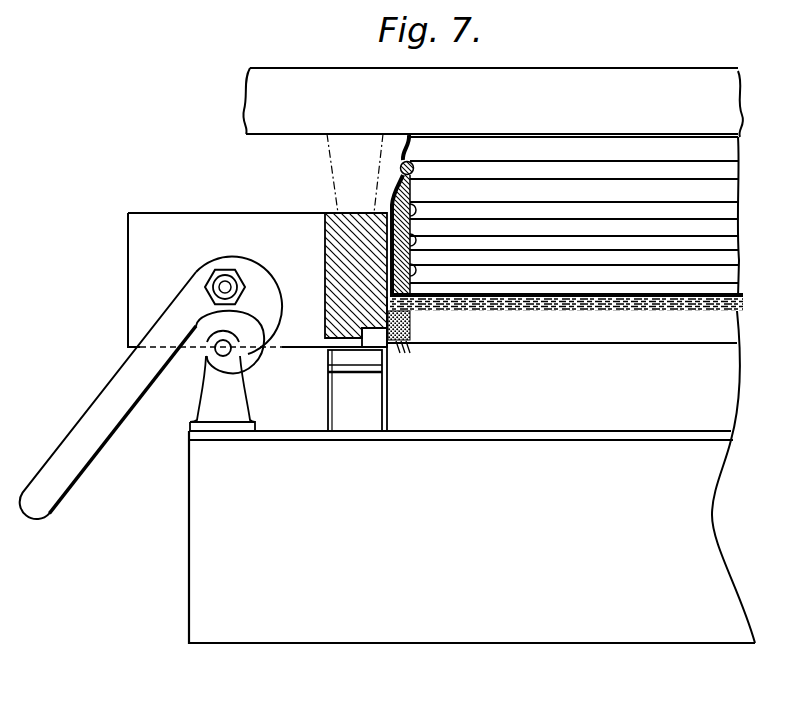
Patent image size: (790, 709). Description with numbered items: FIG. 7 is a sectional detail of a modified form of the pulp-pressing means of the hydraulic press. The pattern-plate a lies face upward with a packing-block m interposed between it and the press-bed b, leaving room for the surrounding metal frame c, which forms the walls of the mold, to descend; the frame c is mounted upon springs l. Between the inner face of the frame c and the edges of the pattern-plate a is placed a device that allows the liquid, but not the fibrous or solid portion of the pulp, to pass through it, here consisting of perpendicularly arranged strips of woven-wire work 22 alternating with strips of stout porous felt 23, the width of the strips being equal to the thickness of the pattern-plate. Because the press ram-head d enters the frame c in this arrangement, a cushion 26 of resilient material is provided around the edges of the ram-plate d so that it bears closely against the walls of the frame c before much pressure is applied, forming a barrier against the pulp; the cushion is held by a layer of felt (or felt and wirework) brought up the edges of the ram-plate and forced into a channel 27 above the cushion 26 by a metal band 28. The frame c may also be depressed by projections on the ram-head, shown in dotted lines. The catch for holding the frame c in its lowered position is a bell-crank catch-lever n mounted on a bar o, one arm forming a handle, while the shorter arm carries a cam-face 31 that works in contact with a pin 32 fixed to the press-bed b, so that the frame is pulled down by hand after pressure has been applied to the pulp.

The press ram-head d is at (493, 182).
The frame c is at (356, 280).
The pattern-plate a is at (565, 320).
The packing-block m is at (563, 368).
The press-bed b is at (472, 537).
The springs l is at (355, 390).
The catch-lever n is at (133, 372).
The bar o is at (226, 285).
The strips of woven-wire work 22 is at (413, 357).
The strips of porous felt 23 is at (412, 325).
The cushion 26 is at (413, 254).
The channel 27 is at (412, 167).
The band 28 is at (401, 167).
The cam-face 31 is at (250, 352).
The pin 32 is at (220, 352).